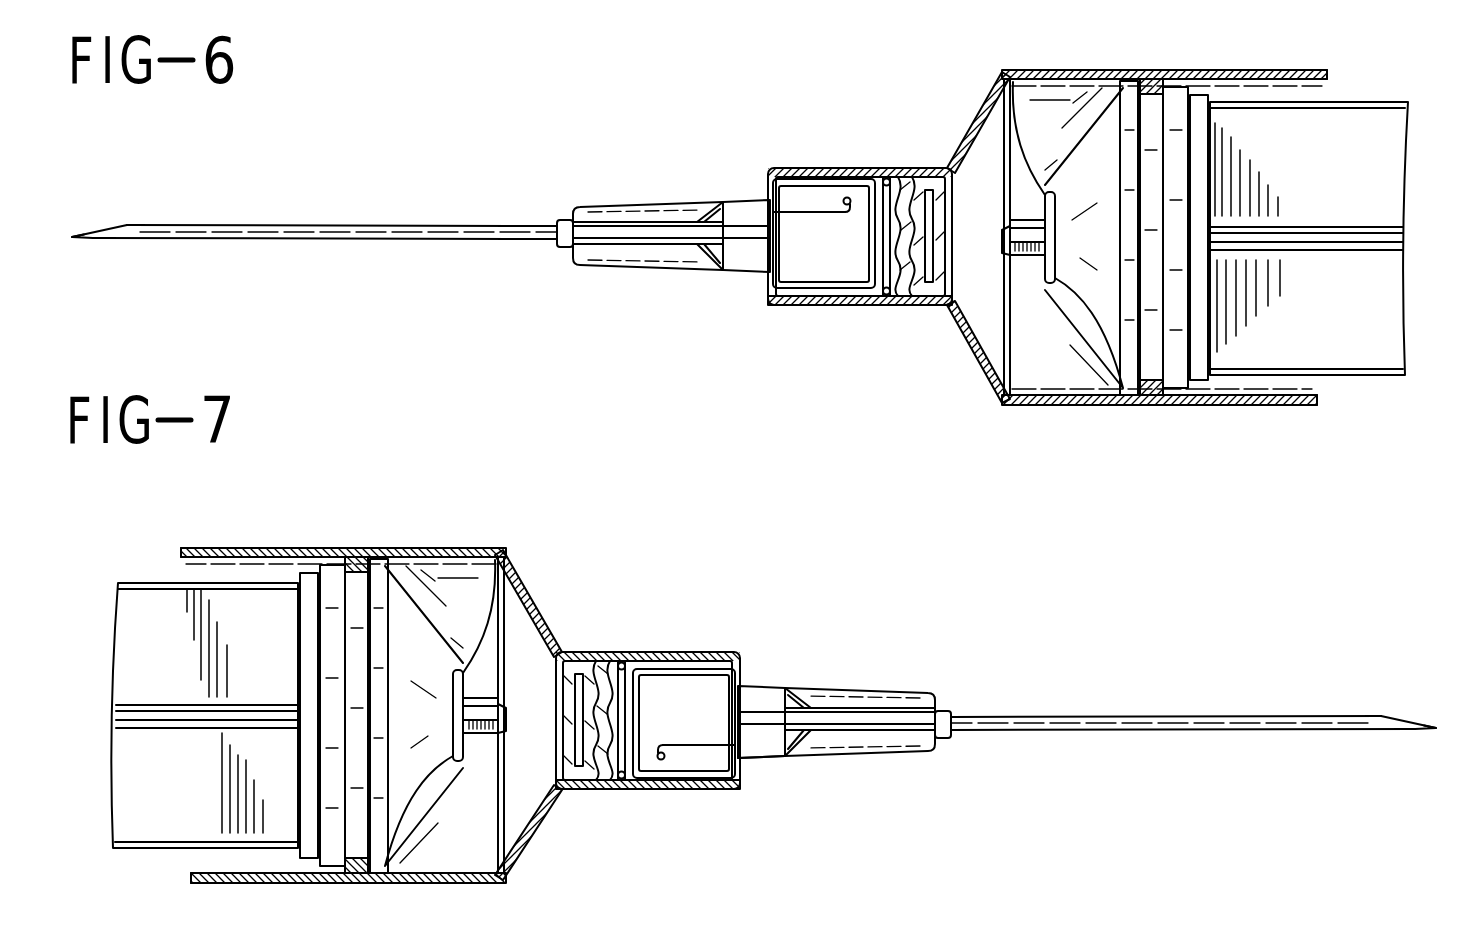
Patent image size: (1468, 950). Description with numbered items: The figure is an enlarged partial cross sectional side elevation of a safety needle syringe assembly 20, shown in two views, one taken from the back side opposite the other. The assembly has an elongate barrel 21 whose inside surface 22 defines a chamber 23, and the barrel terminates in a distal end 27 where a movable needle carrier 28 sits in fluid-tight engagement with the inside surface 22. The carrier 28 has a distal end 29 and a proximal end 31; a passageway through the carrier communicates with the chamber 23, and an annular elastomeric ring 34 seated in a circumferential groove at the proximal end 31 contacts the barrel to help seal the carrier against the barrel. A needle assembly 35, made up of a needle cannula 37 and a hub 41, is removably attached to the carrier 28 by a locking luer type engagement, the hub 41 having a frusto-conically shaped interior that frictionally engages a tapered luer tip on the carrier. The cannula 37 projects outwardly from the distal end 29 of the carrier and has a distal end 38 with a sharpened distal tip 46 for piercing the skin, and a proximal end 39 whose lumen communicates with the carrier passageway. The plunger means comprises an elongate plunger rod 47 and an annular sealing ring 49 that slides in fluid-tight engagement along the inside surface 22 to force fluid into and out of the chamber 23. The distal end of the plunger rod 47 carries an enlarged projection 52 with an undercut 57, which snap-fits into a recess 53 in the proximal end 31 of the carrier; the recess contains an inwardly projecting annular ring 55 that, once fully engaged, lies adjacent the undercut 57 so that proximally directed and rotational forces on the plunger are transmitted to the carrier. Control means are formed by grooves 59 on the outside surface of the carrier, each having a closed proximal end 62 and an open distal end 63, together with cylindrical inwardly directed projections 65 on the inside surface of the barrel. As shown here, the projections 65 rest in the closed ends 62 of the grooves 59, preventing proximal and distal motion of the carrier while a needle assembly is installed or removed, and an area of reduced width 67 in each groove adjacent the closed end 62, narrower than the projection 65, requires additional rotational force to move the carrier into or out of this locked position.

In FIG. 6, the syringe assembly 20 is at (764, 268).
In FIG. 7, the syringe assembly 20 is at (756, 673).
In FIG. 6, the barrel 21 is at (1314, 72).
In FIG. 7, the barrel 21 is at (405, 548).
In FIG. 6, the inside surface 22 is at (1292, 405).
In FIG. 7, the inside surface 22 is at (188, 562).
In FIG. 6, the chamber 23 is at (1032, 395).
In FIG. 6, the distal end 27 is at (980, 99).
In FIG. 7, the distal end 27 is at (542, 615).
In FIG. 6, the needle carrier 28 is at (778, 193).
In FIG. 7, the needle carrier 28 is at (742, 683).
In FIG. 6, the distal end 29 is at (768, 303).
In FIG. 6, the proximal end 31 is at (935, 304).
In FIG. 6, the annular elastomeric ring 34 is at (862, 305).
In FIG. 6, the needle assembly 35 is at (574, 208).
In FIG. 7, the needle assembly 35 is at (922, 693).
In FIG. 6, the needle cannula 37 is at (332, 226).
In FIG. 7, the needle cannula 37 is at (1172, 716).
In FIG. 6, the distal end 38 is at (105, 239).
In FIG. 7, the distal end 38 is at (1394, 730).
In FIG. 6, the proximal end 39 is at (549, 240).
In FIG. 7, the proximal end 39 is at (990, 732).
In FIG. 6, the hub 41 is at (732, 270).
In FIG. 7, the hub 41 is at (780, 758).
In FIG. 6, the sharpened distal tip 46 is at (73, 235).
In FIG. 7, the sharpened distal tip 46 is at (1437, 727).
In FIG. 6, the plunger rod 47 is at (1378, 340).
In FIG. 7, the plunger rod 47 is at (258, 600).
In FIG. 6, the annular sealing ring 49 is at (1152, 396).
In FIG. 7, the annular sealing ring 49 is at (357, 558).
In FIG. 6, the enlarged projection 52 is at (1002, 72).
In FIG. 7, the enlarged projection 52 is at (502, 556).
In FIG. 6, the recess 53 is at (946, 262).
In FIG. 7, the recess 53 is at (549, 790).
In FIG. 6, the inwardly projecting annular ring 55 is at (946, 167).
In FIG. 7, the inwardly projecting annular ring 55 is at (612, 660).
In FIG. 6, the undercut 57 is at (1100, 345).
In FIG. 7, the undercut 57 is at (428, 640).
In FIG. 6, the grooves 59 is at (778, 196).
In FIG. 7, the grooves 59 is at (690, 790).
In FIG. 6, the closed proximal end 62 is at (846, 199).
In FIG. 7, the closed proximal end 62 is at (655, 746).
In FIG. 7, the open distal end 63 is at (764, 760).
In FIG. 7, the inwardly directed projections 65 is at (661, 760).
In FIG. 6, the area of reduced width 67 is at (800, 210).
In FIG. 7, the area of reduced width 67 is at (706, 757).